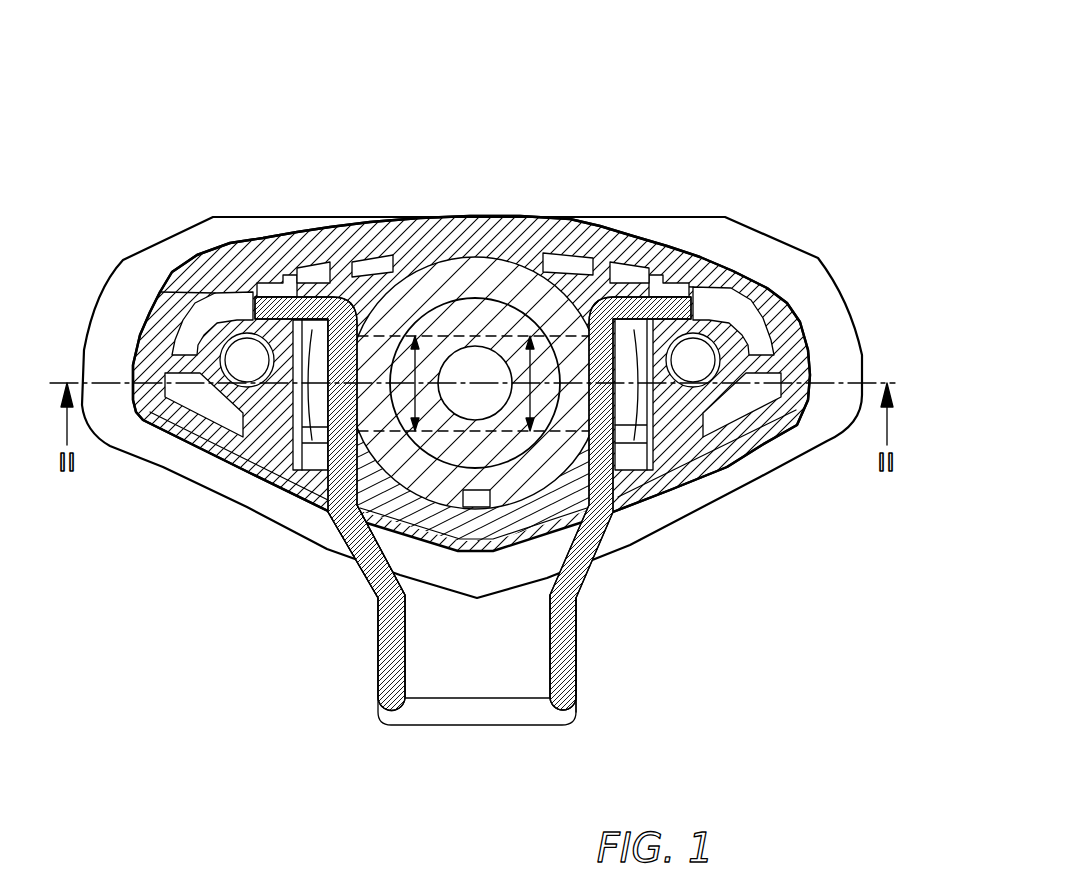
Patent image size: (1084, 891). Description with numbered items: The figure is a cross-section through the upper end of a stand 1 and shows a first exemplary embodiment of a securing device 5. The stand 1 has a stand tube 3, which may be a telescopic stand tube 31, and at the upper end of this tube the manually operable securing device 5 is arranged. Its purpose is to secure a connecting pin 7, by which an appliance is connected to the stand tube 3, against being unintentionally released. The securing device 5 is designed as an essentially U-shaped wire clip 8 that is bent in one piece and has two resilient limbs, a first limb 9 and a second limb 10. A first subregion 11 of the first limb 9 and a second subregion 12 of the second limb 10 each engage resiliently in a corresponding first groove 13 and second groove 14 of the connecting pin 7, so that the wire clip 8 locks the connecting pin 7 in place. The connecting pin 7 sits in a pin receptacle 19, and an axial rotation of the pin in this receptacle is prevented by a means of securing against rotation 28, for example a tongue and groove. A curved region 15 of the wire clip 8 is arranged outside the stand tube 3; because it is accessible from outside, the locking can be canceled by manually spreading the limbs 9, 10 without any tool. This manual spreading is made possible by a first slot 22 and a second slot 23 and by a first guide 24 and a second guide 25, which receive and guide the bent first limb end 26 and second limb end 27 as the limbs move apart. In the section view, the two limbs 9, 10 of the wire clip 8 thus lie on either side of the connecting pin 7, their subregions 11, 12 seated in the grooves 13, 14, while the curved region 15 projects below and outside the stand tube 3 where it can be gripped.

The stand 1 is at (745, 92).
The stand tube 3 is at (480, 235).
The telescopic stand tube 31 is at (480, 235).
The securing device 5 is at (355, 285).
The first groove 13 is at (355, 299).
The second groove 14 is at (593, 299).
The connecting pin 7 is at (440, 290).
The wire clip 8 is at (575, 647).
The first limb 9 is at (340, 465).
The second limb 10 is at (602, 459).
The first subregion 11 is at (474, 383).
The second subregion 12 is at (532, 383).
The curved region 15 is at (610, 697).
The pin receptacle 19 is at (537, 260).
The first slot 22 is at (317, 512).
The second slot 23 is at (633, 514).
The first guide 24 is at (247, 310).
The second guide 25 is at (697, 307).
The first limb end 26 is at (290, 297).
The second limb end 27 is at (653, 290).
The means of securing against rotation 28 is at (365, 568).